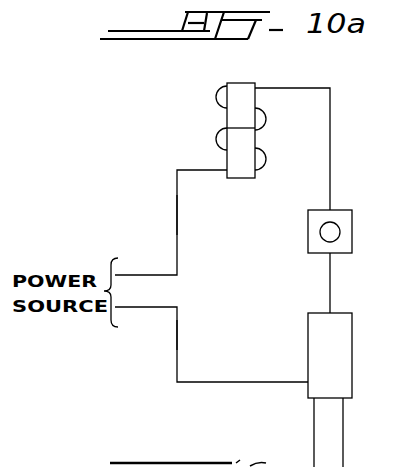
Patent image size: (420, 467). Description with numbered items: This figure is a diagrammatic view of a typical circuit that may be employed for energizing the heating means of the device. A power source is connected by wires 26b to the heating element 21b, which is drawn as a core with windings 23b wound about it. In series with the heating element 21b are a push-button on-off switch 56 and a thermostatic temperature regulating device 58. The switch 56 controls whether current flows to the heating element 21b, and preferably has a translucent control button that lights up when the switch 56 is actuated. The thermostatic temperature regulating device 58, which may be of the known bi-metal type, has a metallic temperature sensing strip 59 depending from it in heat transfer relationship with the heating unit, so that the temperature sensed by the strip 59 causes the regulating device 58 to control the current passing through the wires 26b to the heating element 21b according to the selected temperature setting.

The heating element 21b is at (242, 82).
The coil windings 23b is at (217, 130).
The wires 26b is at (177, 213).
The push-button on-off switch 56 is at (352, 216).
The thermostatic temperature regulating device 58 is at (352, 342).
The metallic temperature sensing strip 59 is at (345, 428).